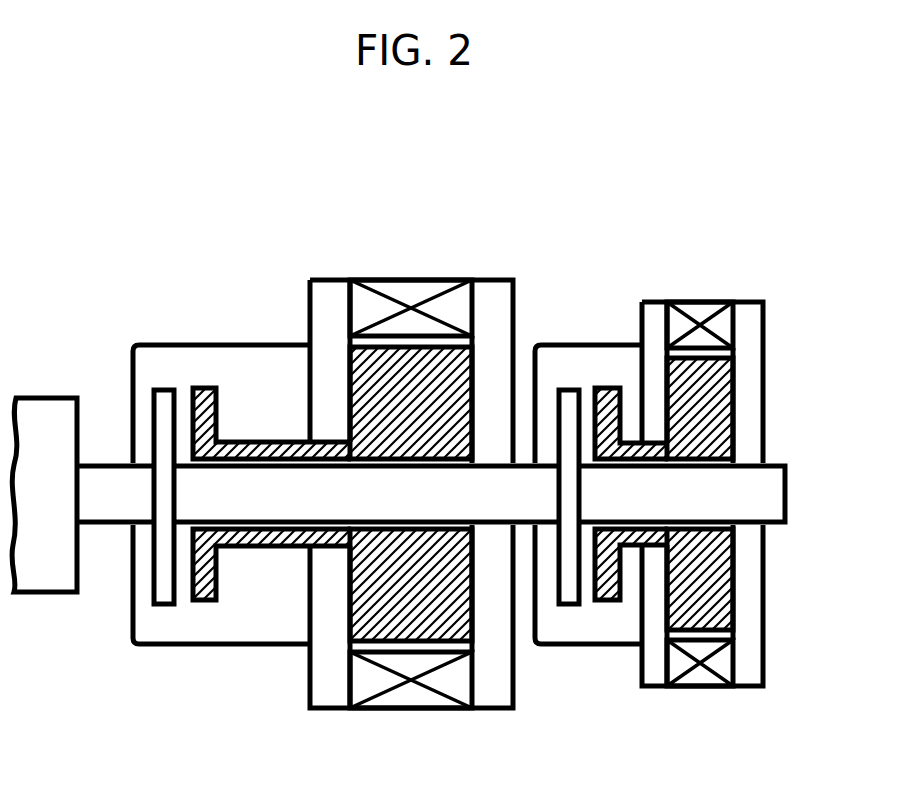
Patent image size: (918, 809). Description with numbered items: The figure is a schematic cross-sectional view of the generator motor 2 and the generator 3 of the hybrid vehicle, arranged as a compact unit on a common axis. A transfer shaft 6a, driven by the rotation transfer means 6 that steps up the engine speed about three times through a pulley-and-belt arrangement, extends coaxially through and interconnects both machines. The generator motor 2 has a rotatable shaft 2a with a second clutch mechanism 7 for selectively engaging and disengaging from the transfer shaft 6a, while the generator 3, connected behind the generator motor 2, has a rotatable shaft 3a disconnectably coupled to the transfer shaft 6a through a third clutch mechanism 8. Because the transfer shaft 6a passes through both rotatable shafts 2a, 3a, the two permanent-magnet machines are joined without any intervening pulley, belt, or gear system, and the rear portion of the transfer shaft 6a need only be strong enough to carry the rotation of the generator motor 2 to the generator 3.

The generator motor 2 is at (452, 259).
The rotatable shaft 2a is at (263, 440).
The generator 3 is at (762, 280).
The rotatable shaft 3a is at (635, 440).
The rotation transfer means 6 is at (50, 386).
The transfer shaft 6a is at (113, 505).
The second clutch mechanism 7 is at (188, 623).
The third clutch mechanism 8 is at (593, 626).